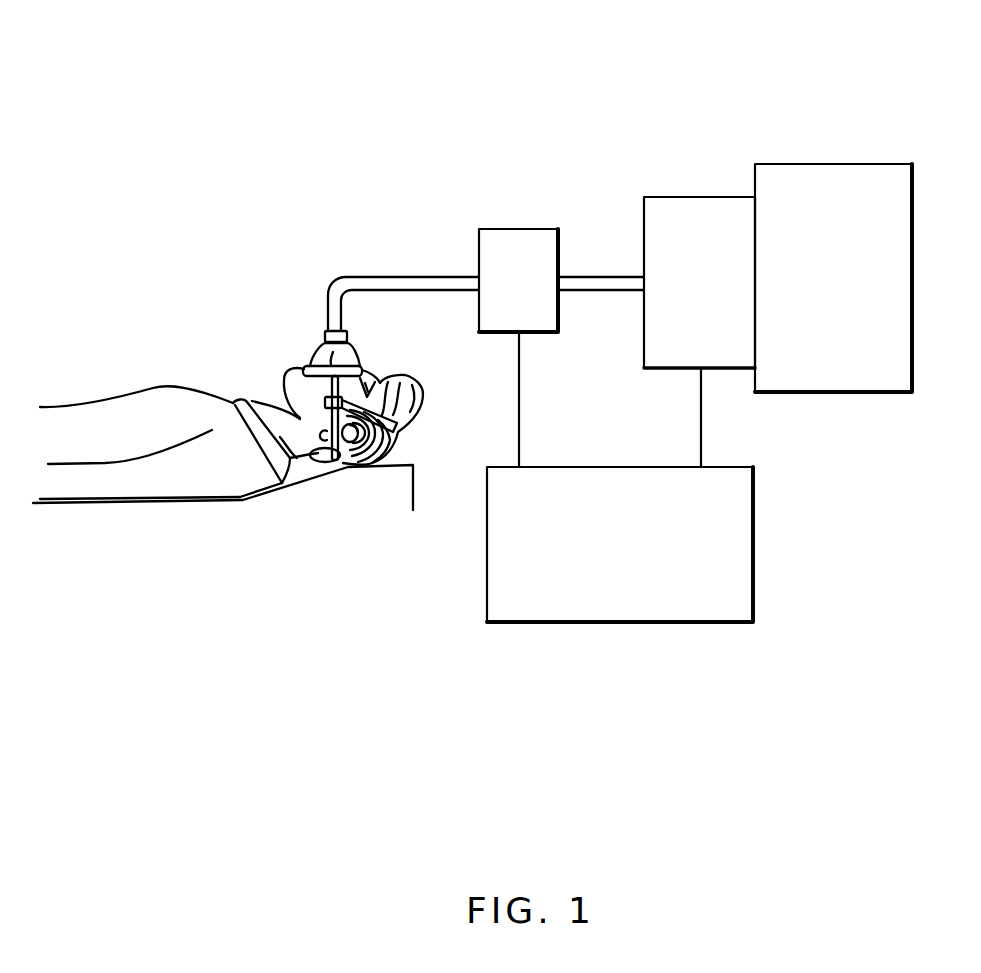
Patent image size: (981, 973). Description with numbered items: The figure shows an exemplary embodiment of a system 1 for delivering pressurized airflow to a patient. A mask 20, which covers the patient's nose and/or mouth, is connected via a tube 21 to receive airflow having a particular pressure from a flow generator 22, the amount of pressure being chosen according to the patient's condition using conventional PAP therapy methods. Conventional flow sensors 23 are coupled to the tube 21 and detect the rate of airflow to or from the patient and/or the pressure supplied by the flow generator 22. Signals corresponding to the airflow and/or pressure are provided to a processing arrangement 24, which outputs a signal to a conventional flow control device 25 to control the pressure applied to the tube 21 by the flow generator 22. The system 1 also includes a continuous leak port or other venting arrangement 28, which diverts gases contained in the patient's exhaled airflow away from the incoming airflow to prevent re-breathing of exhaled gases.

The system 1 is at (331, 104).
The mask 20 is at (320, 345).
The tube 21 is at (335, 278).
The flow generator 22 is at (822, 163).
The flow sensors 23 is at (532, 228).
The processing arrangement 24 is at (527, 628).
The flow control device 25 is at (680, 196).
The venting arrangement 28 is at (325, 327).